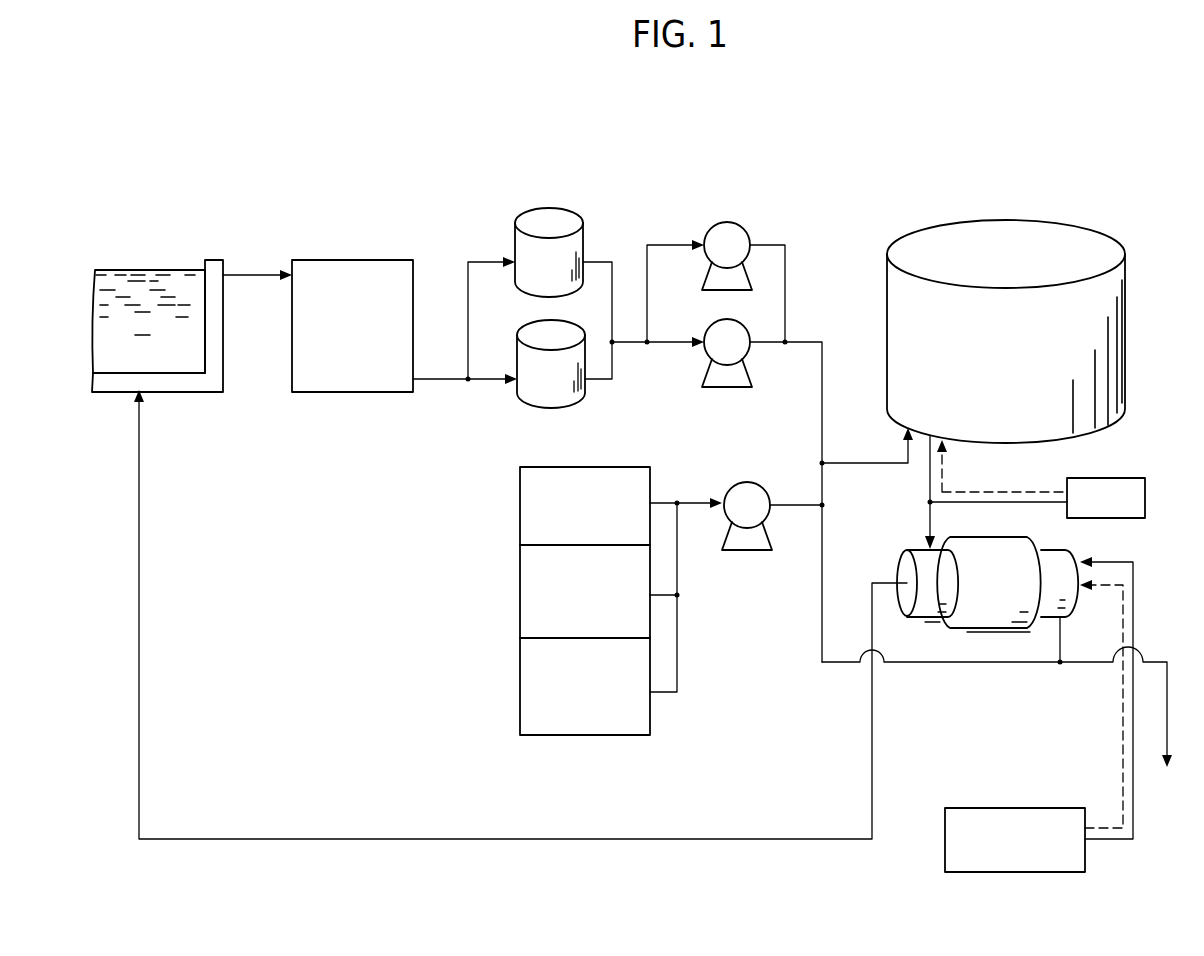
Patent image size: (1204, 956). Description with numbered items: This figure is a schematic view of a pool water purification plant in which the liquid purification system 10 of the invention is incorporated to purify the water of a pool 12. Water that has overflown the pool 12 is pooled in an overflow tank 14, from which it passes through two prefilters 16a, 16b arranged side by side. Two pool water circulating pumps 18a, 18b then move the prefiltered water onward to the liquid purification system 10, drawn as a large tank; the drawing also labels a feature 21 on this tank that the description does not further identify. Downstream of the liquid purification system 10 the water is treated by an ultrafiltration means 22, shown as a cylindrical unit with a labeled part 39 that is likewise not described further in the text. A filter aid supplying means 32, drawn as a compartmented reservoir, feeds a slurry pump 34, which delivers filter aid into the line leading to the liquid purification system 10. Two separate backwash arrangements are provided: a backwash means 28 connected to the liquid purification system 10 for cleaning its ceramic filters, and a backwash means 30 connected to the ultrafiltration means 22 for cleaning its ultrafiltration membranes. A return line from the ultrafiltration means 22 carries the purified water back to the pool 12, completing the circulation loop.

The liquid purification system 10 is at (1134, 222).
The pool 12 is at (196, 392).
The overflow tank 14 is at (357, 392).
The prefilter 16a is at (585, 242).
The prefilter 16b is at (533, 397).
The pool water circulating pump 18a is at (737, 237).
The pool water circulating pump 18b is at (725, 382).
The liquid in tank 21 is at (1113, 342).
The ultrafiltration means 22 is at (1077, 552).
The backwash means 28 is at (1130, 477).
The backwash means 30 is at (1017, 808).
The filter aid supplying means 32 is at (488, 578).
The slurry pump 34 is at (753, 490).
The roller 39 is at (987, 619).